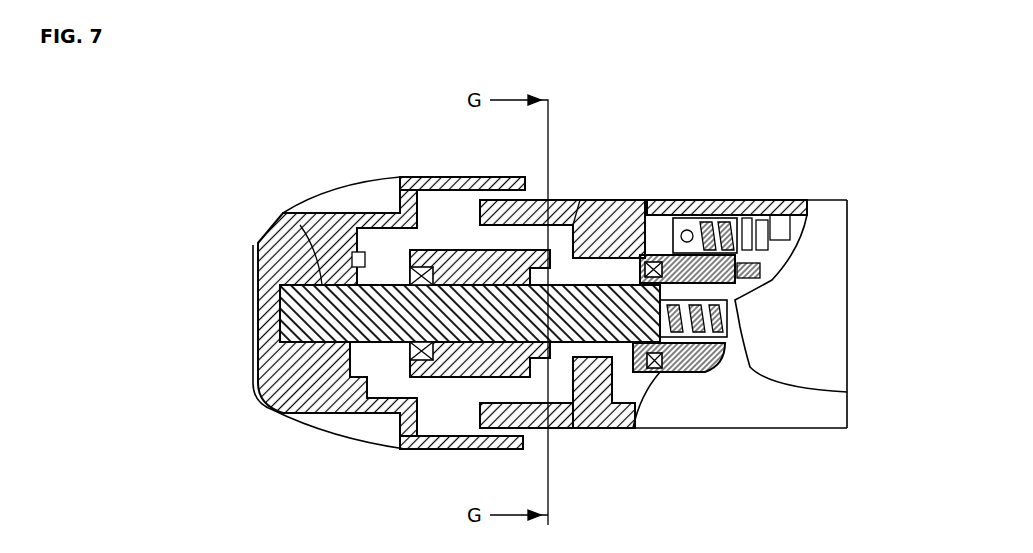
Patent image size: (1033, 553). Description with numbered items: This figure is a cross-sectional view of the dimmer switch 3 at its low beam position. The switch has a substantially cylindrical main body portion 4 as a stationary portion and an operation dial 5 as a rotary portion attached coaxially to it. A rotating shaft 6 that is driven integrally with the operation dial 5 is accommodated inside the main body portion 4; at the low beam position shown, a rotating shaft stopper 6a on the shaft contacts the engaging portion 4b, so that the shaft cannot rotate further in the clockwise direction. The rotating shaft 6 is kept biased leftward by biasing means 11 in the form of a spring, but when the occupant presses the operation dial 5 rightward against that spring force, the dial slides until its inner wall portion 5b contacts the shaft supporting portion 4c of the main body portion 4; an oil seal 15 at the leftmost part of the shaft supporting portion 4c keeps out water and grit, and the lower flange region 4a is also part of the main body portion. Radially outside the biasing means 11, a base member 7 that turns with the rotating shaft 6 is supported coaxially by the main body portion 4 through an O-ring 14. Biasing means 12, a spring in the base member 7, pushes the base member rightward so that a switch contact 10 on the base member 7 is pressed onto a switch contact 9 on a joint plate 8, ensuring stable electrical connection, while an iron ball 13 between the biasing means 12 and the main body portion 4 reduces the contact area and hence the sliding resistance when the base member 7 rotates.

The dimmer switch 3 is at (387, 97).
The main body portion 4 is at (543, 259).
The lower flange of bearing holder 4a is at (528, 430).
The engaging portion 4b is at (608, 430).
The shaft supporting portion 4c is at (453, 176).
The operation dial 5 is at (422, 176).
The inner wall portion 5b is at (318, 228).
The rotating shaft 6 is at (283, 213).
The rotating shaft stopper 6a is at (585, 205).
The base member 7 is at (703, 373).
The joint plate 8 is at (797, 217).
The switch contact 9 is at (799, 200).
The switch contact 10 is at (757, 200).
The biasing means 11 is at (847, 392).
The biasing means 12 is at (727, 215).
The iron ball 13 is at (699, 215).
The O-ring 14 is at (650, 262).
The oil seal 15 is at (410, 276).